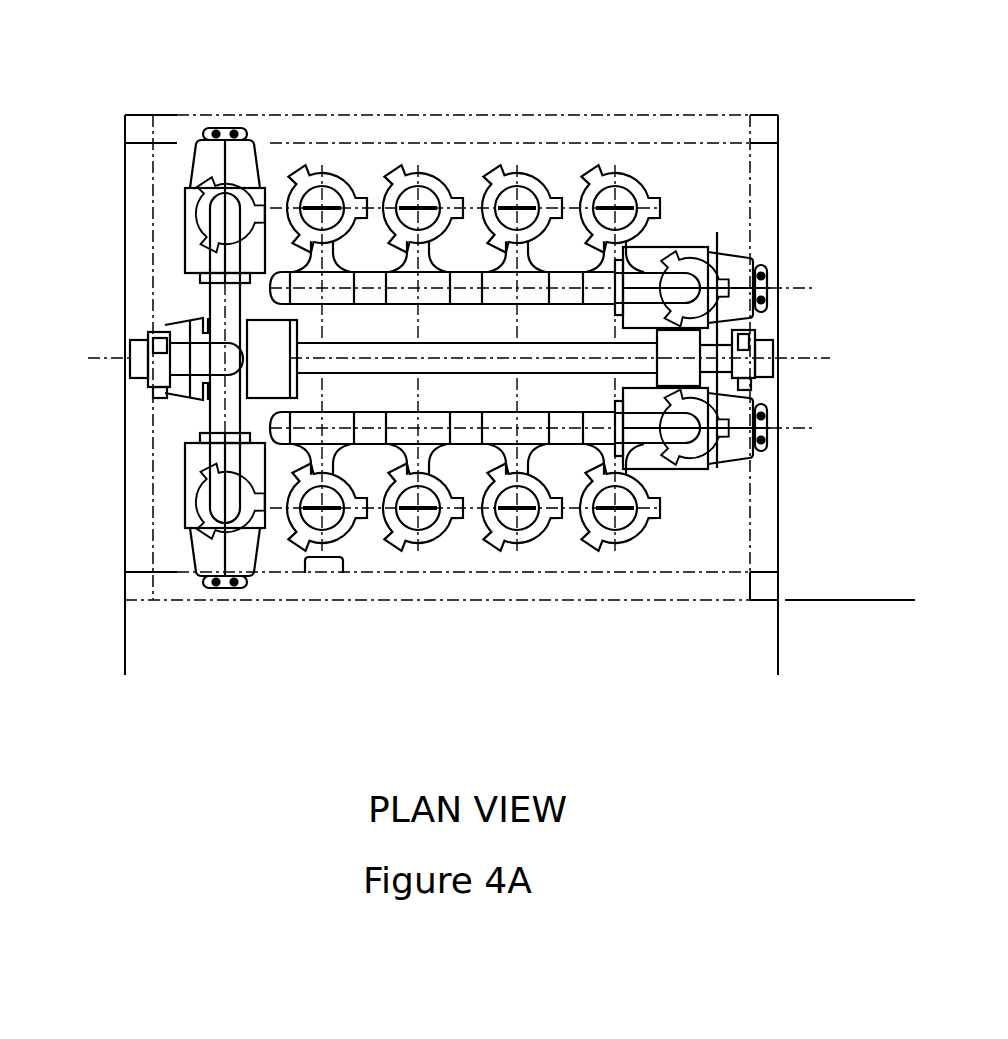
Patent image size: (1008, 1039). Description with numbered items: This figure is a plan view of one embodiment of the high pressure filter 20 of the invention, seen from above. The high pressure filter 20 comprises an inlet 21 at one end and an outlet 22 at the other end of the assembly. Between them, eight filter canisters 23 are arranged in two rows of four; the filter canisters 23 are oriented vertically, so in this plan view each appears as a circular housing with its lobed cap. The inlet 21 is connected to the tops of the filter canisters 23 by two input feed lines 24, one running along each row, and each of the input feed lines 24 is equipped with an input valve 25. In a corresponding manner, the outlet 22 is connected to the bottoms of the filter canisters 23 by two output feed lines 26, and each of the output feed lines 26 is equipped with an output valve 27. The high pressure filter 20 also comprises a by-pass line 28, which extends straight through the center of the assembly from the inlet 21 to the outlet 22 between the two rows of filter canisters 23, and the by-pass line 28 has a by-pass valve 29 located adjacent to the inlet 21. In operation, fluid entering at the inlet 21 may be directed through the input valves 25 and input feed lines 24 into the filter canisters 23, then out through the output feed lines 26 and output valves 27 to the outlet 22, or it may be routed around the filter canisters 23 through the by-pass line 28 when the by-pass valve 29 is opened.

The high pressure filter 20 is at (646, 614).
The inlet 21 is at (773, 340).
The outlet 22 is at (132, 380).
The filter canister 23 is at (330, 180).
The input feed line 24 is at (568, 268).
The input valve 25 is at (742, 265).
The output feed line 26 is at (220, 220).
The output valve 27 is at (197, 150).
The by-pass line 28 is at (625, 367).
The by-pass valve 29 is at (193, 333).